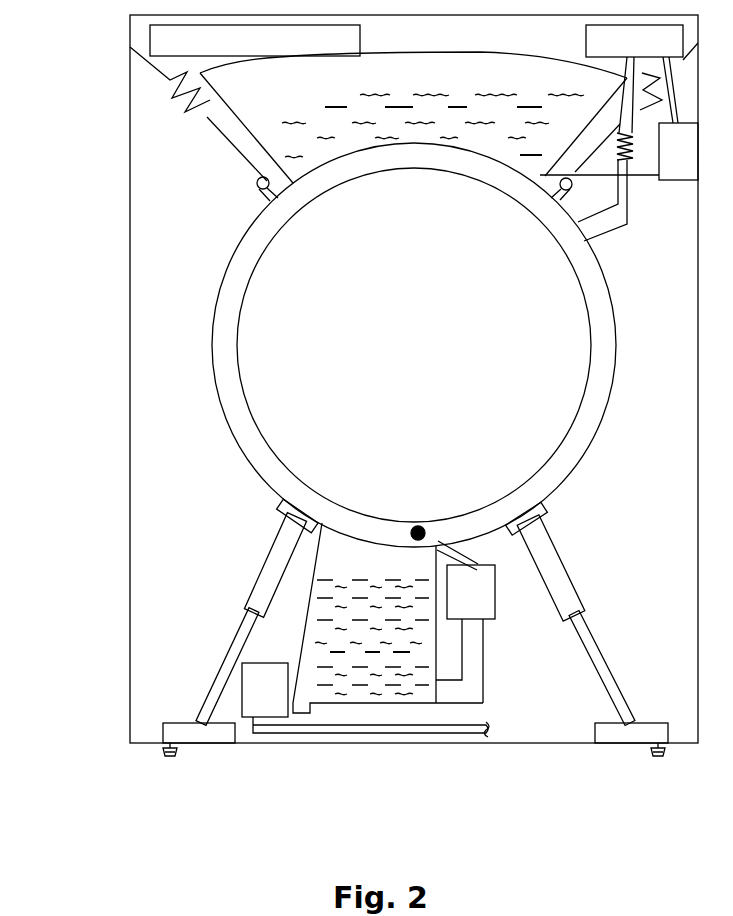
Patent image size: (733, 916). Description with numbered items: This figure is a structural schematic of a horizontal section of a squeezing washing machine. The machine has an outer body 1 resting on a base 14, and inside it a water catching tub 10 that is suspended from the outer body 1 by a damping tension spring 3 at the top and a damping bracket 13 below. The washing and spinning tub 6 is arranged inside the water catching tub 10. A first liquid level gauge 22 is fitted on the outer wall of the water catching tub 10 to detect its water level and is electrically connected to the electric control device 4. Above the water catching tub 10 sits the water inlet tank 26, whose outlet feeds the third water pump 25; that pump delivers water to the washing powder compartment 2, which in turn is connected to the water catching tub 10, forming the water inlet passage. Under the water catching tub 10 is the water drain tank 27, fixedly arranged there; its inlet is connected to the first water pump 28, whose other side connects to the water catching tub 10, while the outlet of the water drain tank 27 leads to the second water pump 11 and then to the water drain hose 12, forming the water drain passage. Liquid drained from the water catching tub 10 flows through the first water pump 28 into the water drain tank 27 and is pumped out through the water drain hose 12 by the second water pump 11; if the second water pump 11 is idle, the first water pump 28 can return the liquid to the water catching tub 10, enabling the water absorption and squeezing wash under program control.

The outer body 1 is at (130, 83).
The washing powder compartment 2 is at (600, 38).
The damping tension spring 3 is at (202, 120).
The electric control device 4 is at (200, 32).
The washing and spinning tub 6 is at (240, 328).
The water catching tub 10 is at (217, 381).
The second water pump 11 is at (255, 688).
The water drain hose 12 is at (297, 732).
The damping bracket 13 is at (232, 652).
The base 14 is at (167, 750).
The first liquid level gauge 22 is at (418, 533).
The third water pump 25 is at (673, 150).
The water inlet tank 26 is at (387, 113).
The water drain tank 27 is at (323, 613).
The first water pump 28 is at (462, 595).